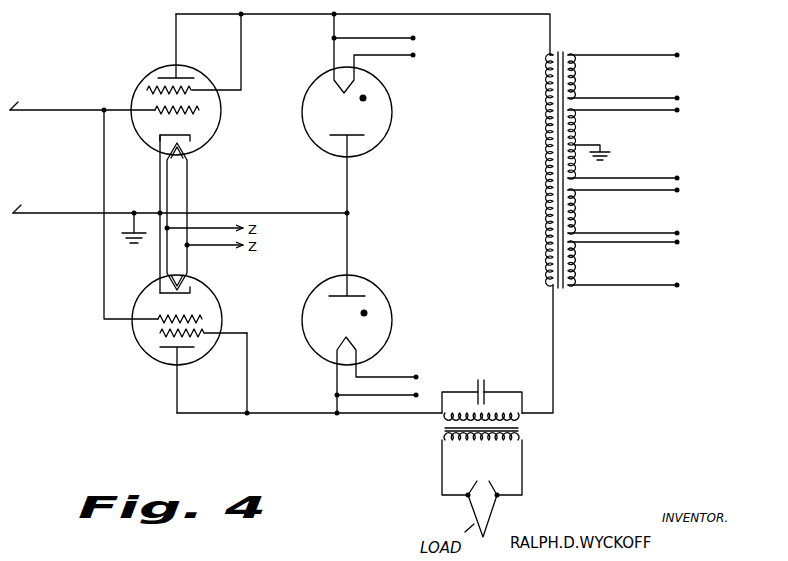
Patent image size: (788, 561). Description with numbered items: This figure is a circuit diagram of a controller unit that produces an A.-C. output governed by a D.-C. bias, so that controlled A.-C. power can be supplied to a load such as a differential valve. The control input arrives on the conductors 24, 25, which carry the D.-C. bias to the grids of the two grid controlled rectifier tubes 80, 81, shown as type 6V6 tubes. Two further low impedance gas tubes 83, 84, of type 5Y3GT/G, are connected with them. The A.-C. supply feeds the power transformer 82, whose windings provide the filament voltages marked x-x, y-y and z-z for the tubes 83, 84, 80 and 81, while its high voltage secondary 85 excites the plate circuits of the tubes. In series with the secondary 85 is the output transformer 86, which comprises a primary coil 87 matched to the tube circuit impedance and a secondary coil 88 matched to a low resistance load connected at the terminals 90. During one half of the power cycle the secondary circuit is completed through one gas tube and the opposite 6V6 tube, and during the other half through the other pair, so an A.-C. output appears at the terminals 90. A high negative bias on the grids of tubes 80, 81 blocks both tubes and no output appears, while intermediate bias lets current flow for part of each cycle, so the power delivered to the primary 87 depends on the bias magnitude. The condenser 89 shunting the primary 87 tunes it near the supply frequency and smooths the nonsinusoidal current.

The input terminal / conductor 24 is at (82, 99).
The input terminal / conductor 25 is at (180, 216).
The grid controlled rectifier tube 80 is at (147, 77).
The grid controlled rectifier tube 81 is at (136, 334).
The power transformer 82 is at (560, 52).
The gas tube 83 is at (370, 150).
The gas tube 84 is at (387, 301).
The secondary 85 is at (546, 189).
The output transformer 86 is at (522, 429).
The primary coil 87 is at (497, 412).
The secondary coil 88 is at (452, 446).
The condenser 89 is at (483, 378).
The terminals 90 is at (482, 488).